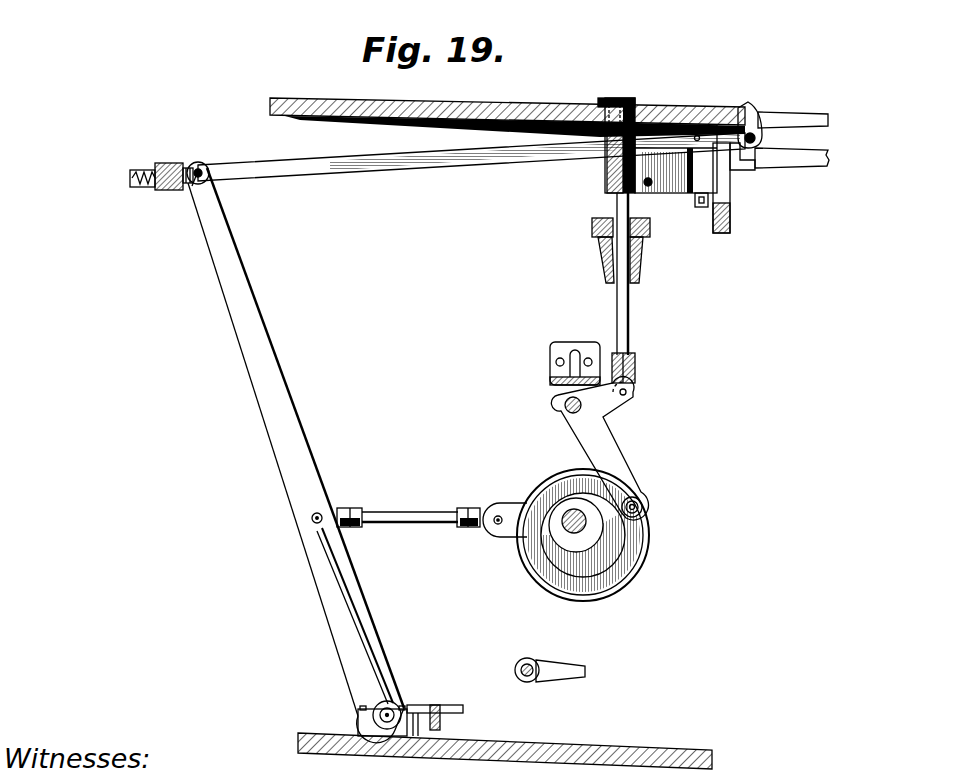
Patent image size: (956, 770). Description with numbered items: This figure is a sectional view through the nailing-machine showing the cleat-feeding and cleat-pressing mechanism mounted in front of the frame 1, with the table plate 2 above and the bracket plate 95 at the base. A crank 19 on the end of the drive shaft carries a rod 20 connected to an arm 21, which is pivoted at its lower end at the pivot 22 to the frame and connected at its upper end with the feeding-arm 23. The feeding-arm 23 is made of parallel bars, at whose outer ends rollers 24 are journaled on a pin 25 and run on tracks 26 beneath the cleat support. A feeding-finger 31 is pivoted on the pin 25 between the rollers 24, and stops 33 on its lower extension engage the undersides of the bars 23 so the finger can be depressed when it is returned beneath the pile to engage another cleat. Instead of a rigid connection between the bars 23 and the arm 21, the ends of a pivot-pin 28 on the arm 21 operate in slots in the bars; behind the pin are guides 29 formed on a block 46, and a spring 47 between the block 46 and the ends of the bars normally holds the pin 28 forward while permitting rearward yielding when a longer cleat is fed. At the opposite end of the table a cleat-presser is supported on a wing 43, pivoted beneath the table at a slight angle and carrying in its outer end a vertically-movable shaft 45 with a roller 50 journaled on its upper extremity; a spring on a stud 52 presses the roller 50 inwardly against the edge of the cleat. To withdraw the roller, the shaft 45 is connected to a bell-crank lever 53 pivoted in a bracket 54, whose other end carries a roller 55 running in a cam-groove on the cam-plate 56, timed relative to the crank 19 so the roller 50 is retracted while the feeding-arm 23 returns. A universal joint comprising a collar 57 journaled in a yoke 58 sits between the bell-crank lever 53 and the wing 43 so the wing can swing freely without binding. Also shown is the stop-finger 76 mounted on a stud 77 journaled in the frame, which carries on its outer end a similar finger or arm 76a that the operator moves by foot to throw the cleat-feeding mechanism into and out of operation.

The frame 1 is at (595, 744).
The table plate 2 is at (522, 110).
The crank 19 is at (513, 530).
The rod 20 is at (405, 523).
The arm 21 is at (282, 405).
The pivot 22 is at (392, 712).
The feeding-arm 23 is at (421, 166).
The rollers 24 is at (763, 127).
The pin 25 is at (757, 141).
The tracks 26 is at (790, 158).
The pivot-pin 28 is at (200, 169).
The guides 29 is at (192, 186).
The feeding-finger 31 is at (745, 106).
The stops 33 is at (737, 162).
The wing 43 is at (606, 167).
The vertically-movable shaft 45 is at (617, 205).
The block 46 is at (171, 189).
The spring 47 is at (137, 187).
The roller 50 is at (622, 104).
The stud 52 is at (650, 185).
The bell-crank lever 53 is at (603, 448).
The bracket 54 is at (560, 389).
The roller 55 is at (641, 503).
The cam-plate 56 is at (612, 572).
The collar 57 is at (600, 241).
The yoke 58 is at (640, 247).
The stop-finger 76 is at (573, 533).
The finger or arm 76a is at (567, 674).
The stud 77 is at (520, 678).
The bracket plate 95 is at (448, 707).